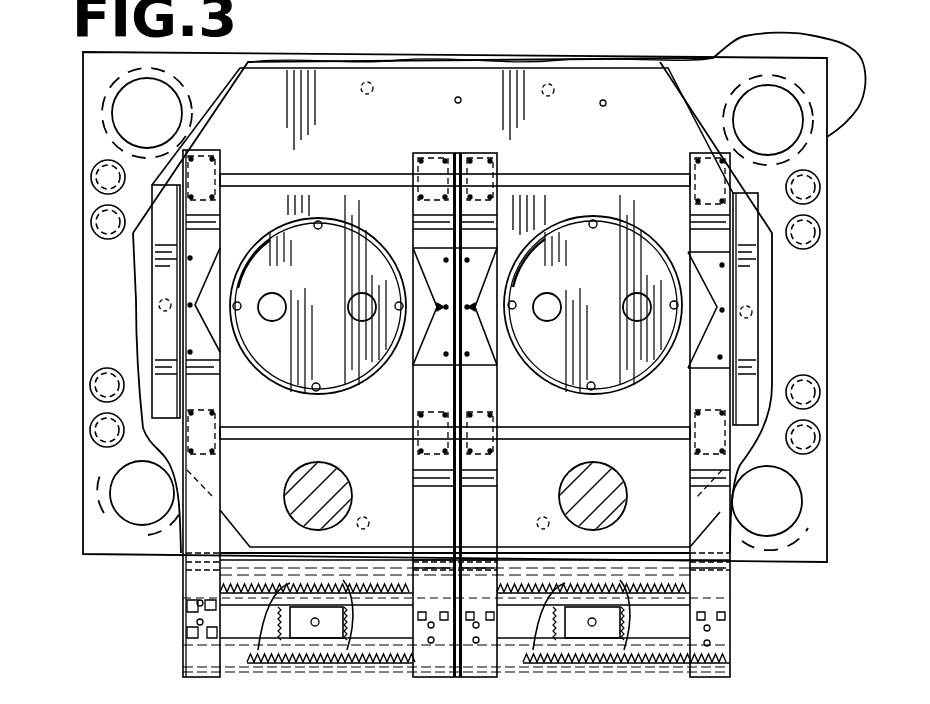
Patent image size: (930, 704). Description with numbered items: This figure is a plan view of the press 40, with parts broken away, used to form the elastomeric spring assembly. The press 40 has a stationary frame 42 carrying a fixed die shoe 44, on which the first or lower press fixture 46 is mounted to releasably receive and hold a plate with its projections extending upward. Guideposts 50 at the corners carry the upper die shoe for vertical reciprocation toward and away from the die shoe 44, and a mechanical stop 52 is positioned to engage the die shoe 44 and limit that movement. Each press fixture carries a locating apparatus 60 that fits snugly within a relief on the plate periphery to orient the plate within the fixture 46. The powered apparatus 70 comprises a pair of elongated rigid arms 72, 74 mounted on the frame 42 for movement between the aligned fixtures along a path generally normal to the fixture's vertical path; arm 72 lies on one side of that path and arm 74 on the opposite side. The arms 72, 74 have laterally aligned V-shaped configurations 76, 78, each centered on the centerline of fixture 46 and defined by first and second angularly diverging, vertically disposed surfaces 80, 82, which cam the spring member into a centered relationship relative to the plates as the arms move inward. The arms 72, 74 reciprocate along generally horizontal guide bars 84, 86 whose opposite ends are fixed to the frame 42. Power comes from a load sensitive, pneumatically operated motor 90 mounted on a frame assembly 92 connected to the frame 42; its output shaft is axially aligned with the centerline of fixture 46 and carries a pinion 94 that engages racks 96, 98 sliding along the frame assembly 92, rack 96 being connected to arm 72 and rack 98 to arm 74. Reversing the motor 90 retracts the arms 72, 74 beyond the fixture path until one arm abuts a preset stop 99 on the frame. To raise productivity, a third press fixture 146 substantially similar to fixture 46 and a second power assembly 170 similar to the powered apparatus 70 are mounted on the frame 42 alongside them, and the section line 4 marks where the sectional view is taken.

The section line 4- 4 is at (45, 515).
The press 40 is at (66, 238).
The stationary frame 42 is at (775, 40).
The fixed die shoe 44 is at (575, 90).
The first press fixture 46 is at (246, 245).
The guideposts 50 is at (147, 93).
The mechanical stop 52 is at (292, 478).
The locating apparatus 60 is at (253, 263).
The powered apparatus 70 is at (408, 168).
The first arm 72 is at (420, 222).
The second arm 74 is at (210, 392).
The V-shaped configuration 76 is at (418, 352).
The V-shaped configuration 78 is at (205, 328).
The first diverging surface 80 is at (430, 333).
The second diverging surface 82 is at (415, 270).
The guide bar 84 is at (232, 182).
The guide bar 86 is at (232, 435).
The motor 90 is at (258, 660).
The frame assembly 92 is at (315, 638).
The pinion 94 is at (352, 652).
The rack 96 is at (390, 664).
The rack 98 is at (240, 592).
The preset stop 99 is at (167, 283).
The third press fixture 146 is at (672, 218).
The second power assembly 170 is at (682, 165).